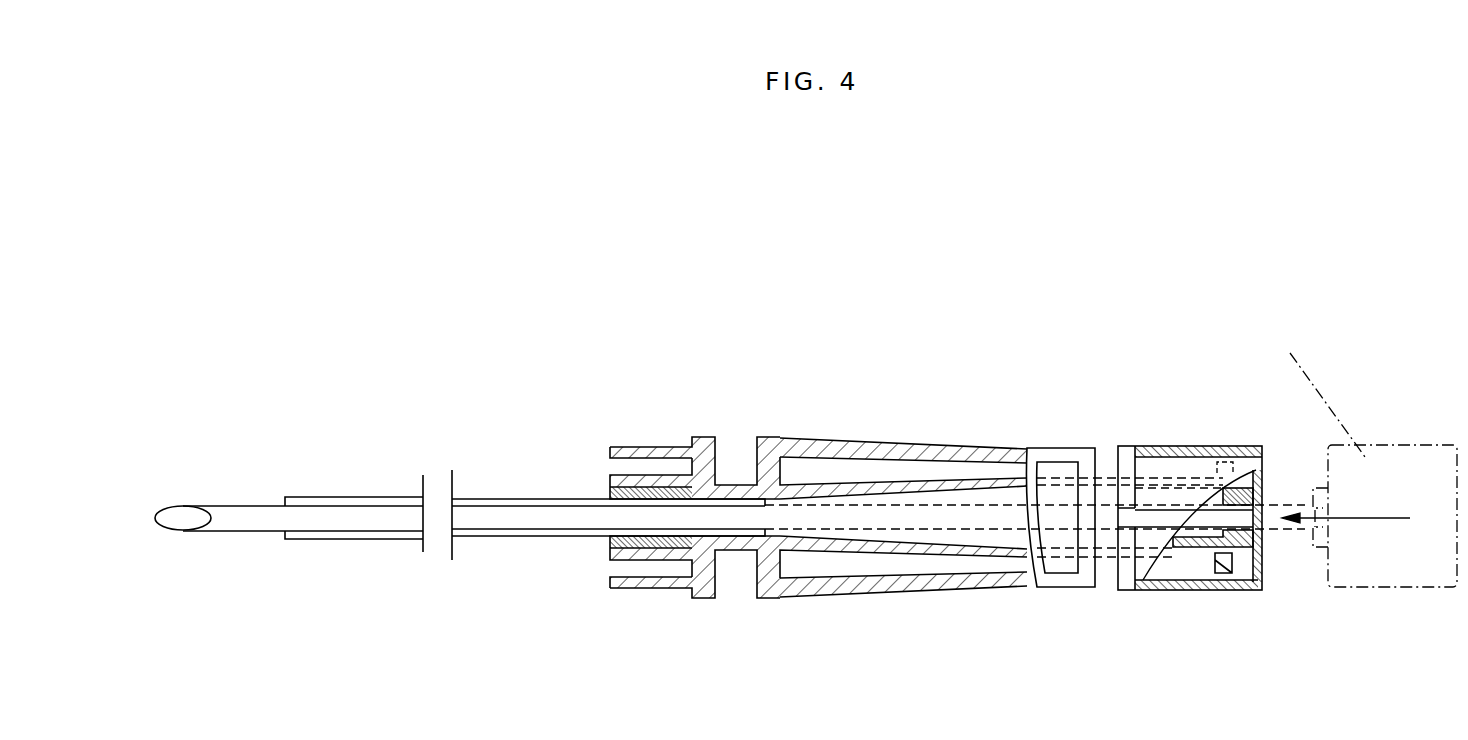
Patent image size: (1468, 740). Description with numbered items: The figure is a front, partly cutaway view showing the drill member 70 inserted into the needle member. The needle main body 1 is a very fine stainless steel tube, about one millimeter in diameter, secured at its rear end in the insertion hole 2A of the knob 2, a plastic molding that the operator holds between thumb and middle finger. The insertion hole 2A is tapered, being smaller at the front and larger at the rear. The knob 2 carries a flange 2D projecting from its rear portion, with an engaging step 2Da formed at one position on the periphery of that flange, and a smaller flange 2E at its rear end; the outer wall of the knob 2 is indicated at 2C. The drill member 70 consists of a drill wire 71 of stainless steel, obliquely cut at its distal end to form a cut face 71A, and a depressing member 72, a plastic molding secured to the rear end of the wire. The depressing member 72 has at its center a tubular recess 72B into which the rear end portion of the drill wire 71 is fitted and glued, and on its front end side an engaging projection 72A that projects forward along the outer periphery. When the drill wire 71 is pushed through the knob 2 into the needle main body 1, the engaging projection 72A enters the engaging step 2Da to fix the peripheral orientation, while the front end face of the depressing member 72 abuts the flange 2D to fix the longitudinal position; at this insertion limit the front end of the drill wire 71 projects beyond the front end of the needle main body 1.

The needle main body 1 is at (518, 540).
The knob 2 is at (853, 431).
The insertion hole 2A is at (960, 488).
The outer wall of connector body 2C is at (909, 448).
The flange 2D is at (1127, 455).
The engaging step 2Da is at (1136, 500).
The smaller flange 2E is at (1222, 565).
The drill member 70 is at (554, 497).
The drill wire 71 is at (475, 520).
The cut face 71A is at (180, 518).
The depressing member 72 is at (1182, 496).
The engaging projection 72A is at (1125, 520).
The tubular recess 72B is at (1197, 546).